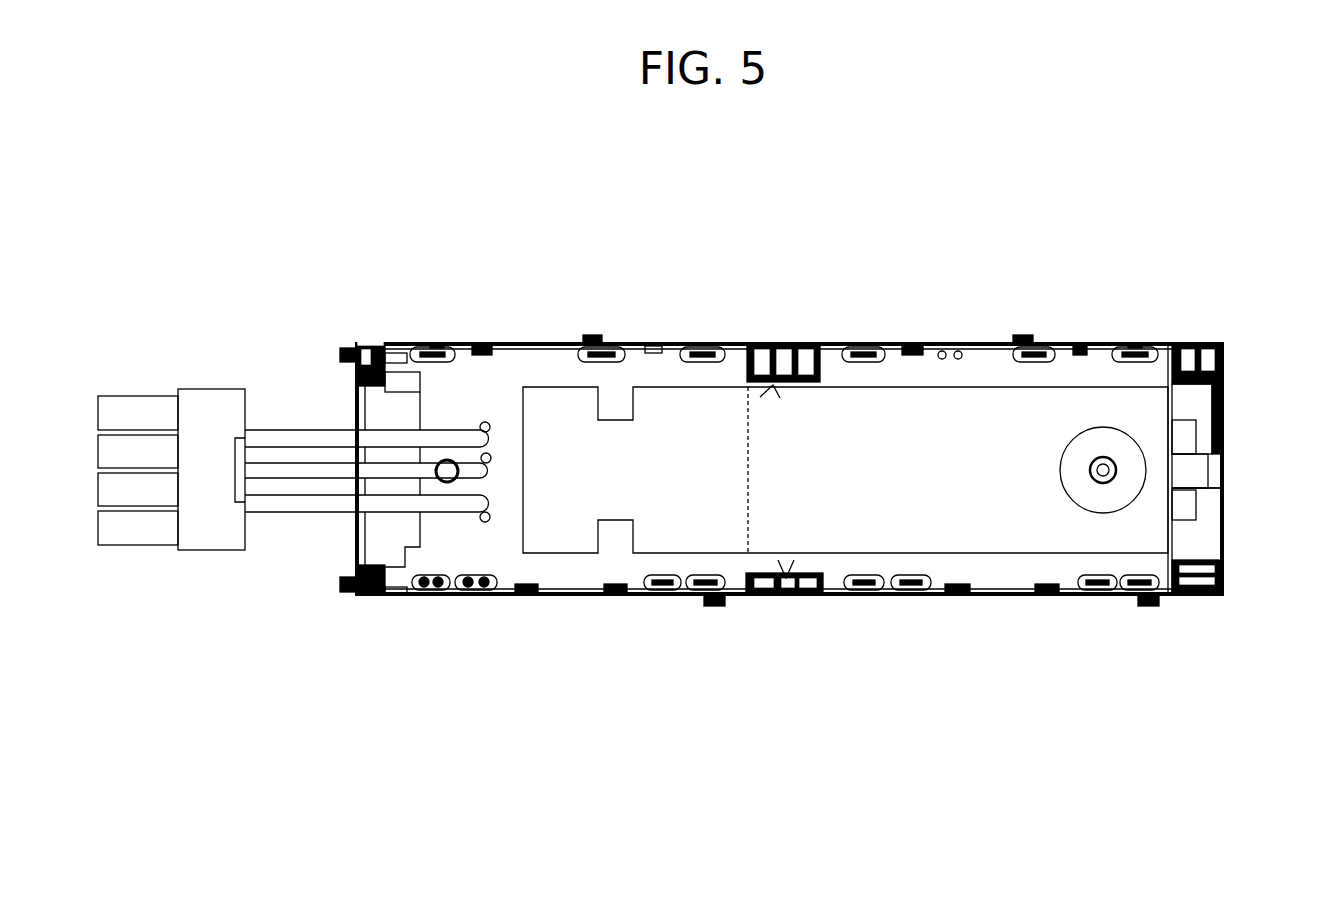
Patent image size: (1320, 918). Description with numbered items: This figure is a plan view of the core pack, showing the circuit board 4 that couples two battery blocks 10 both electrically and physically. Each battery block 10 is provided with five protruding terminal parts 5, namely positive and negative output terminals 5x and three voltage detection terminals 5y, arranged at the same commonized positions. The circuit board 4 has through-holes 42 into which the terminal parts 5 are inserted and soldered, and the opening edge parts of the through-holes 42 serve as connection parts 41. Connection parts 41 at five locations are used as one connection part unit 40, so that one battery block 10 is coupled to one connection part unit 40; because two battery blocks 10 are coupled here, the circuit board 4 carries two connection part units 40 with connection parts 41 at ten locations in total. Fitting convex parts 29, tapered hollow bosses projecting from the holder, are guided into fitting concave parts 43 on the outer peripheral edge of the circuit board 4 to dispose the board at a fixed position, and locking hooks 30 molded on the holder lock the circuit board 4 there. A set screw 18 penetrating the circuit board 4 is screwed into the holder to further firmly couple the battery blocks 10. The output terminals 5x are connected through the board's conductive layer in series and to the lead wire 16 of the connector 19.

The circuit board 4 is at (443, 527).
The terminal part 5 is at (1270, 247).
The output terminal 5x is at (1135, 582).
The voltage detection terminal 5y is at (440, 343).
The battery block 10 is at (363, 638).
The lead wire 16 is at (300, 430).
The set screw 18 is at (1103, 465).
The connector 19 is at (148, 372).
The fitting convex part 29 is at (767, 342).
The locking hook 30 is at (482, 342).
The connection part unit 40 is at (745, 230).
The connection part 41 is at (437, 378).
The through-hole 42 is at (440, 340).
The fitting concave part 43 is at (773, 382).